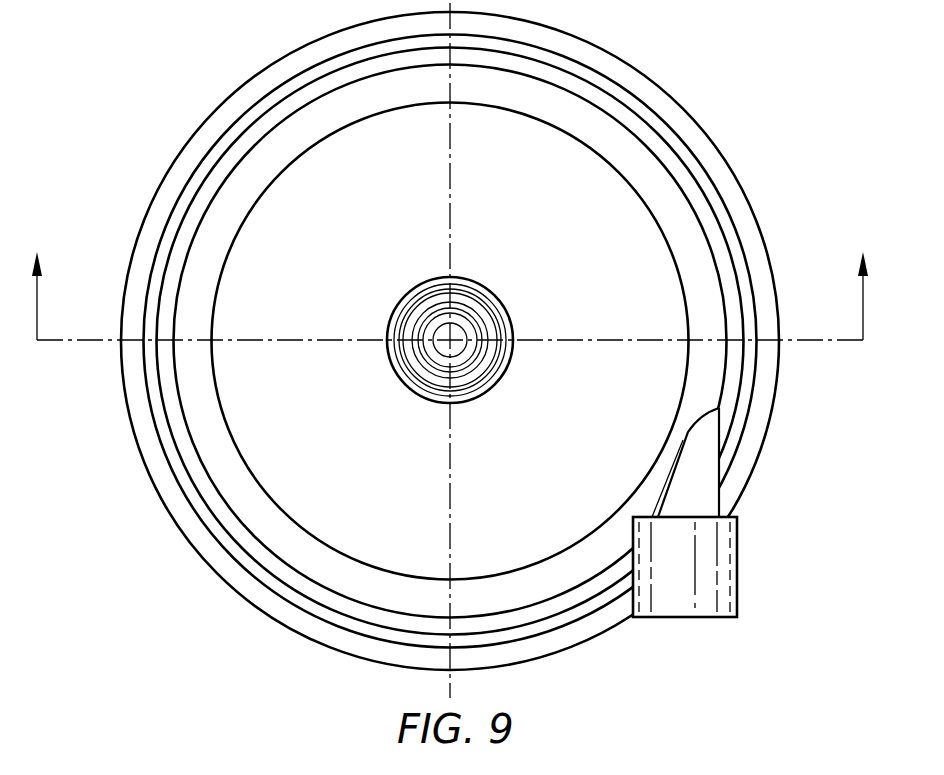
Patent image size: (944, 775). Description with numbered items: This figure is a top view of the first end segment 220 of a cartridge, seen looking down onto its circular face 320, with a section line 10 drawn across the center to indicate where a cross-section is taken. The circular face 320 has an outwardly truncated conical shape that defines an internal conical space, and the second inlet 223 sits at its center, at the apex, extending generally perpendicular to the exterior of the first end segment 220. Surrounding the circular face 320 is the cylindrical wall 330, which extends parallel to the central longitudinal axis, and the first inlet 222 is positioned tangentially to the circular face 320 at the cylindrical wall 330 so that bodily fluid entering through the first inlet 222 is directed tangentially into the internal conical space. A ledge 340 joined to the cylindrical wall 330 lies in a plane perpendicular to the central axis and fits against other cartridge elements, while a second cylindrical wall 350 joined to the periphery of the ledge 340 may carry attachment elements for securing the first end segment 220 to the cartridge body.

The section line 10 is at (450, 286).
The first end segment 220 is at (477, 341).
The first inlet 222 is at (739, 560).
The second inlet 223 is at (398, 376).
The circular face 320 is at (613, 212).
The cylindrical wall 330 is at (597, 102).
The ledge 340 is at (660, 130).
The second cylindrical wall 350 is at (722, 153).